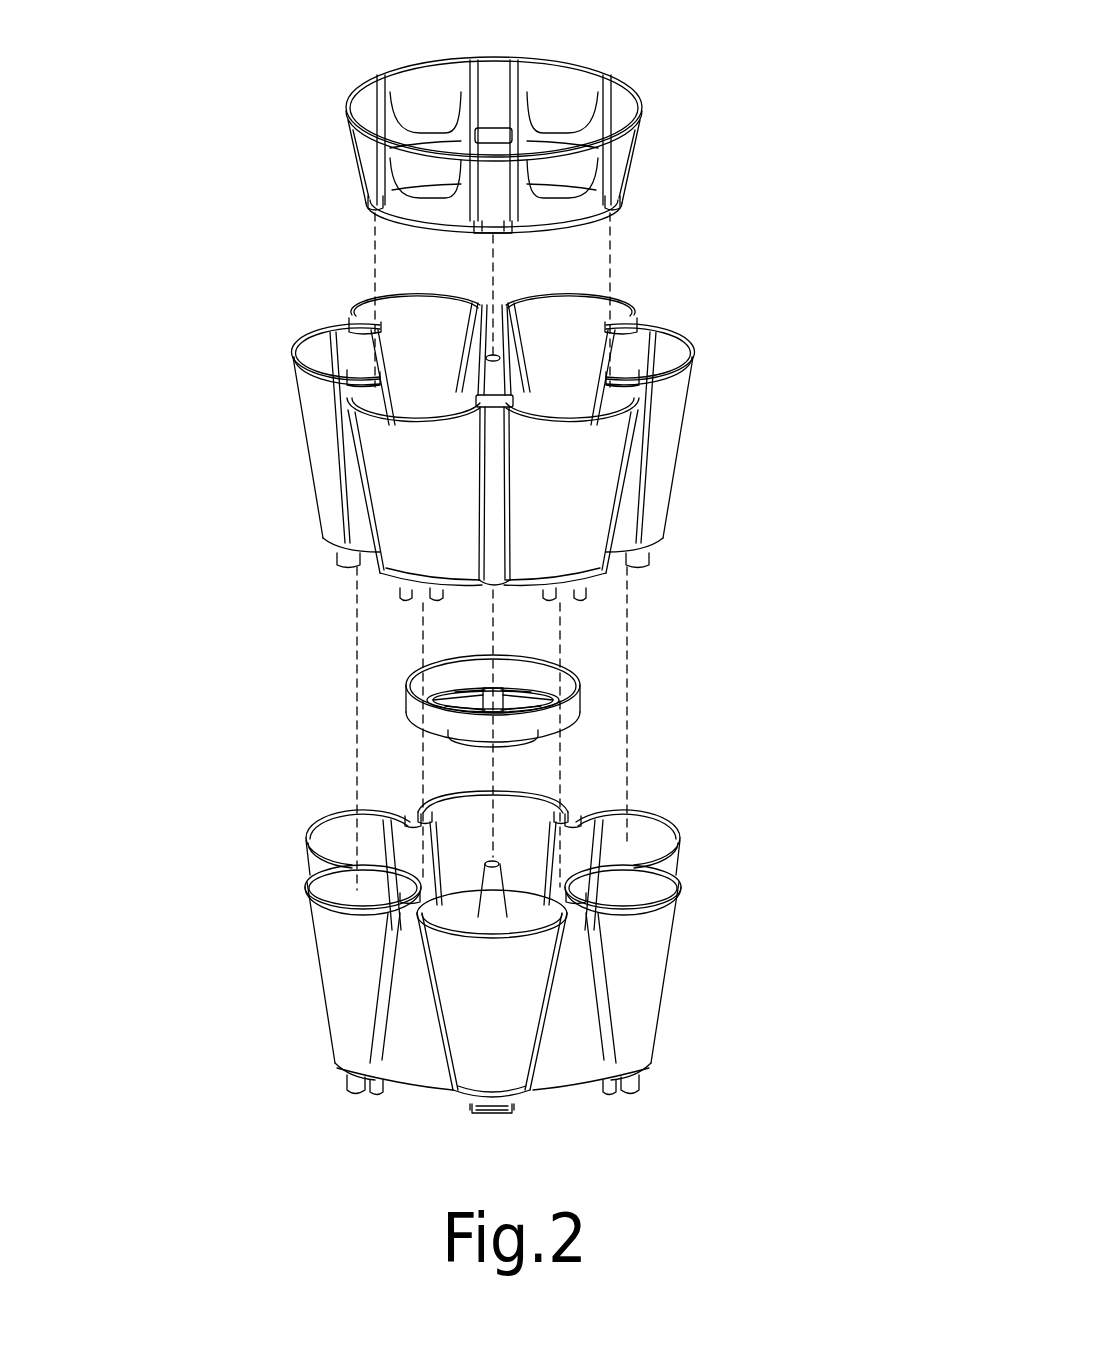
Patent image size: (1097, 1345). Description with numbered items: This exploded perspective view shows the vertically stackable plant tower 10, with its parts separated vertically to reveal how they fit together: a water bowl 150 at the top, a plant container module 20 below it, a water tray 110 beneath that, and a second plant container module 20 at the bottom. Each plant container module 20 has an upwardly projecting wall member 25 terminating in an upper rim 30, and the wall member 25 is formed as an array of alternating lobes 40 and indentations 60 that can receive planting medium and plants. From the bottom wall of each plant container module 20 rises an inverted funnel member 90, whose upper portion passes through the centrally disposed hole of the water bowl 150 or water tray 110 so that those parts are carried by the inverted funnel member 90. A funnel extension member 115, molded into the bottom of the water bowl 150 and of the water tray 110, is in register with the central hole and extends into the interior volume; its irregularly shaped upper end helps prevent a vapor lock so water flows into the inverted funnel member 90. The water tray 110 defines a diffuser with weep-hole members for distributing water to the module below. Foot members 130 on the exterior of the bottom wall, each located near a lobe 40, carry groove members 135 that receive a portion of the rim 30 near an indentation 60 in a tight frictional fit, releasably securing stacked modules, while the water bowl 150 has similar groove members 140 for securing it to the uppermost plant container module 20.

The vertically stackable plant tower 10 is at (800, 72).
The plant container module 20 is at (397, 293).
The upwardly projecting wall member 25 is at (670, 468).
The upper rim 30 is at (697, 360).
The lobe 40 is at (678, 393).
The indentation 60 is at (630, 314).
The inverted funnel member 90 is at (487, 379).
The water tray 110 is at (418, 710).
The funnel extension member 115 is at (490, 698).
The foot member 130 is at (512, 1105).
The groove member 135 is at (473, 1112).
The groove member 140 is at (623, 202).
The water bowl 150 is at (617, 163).